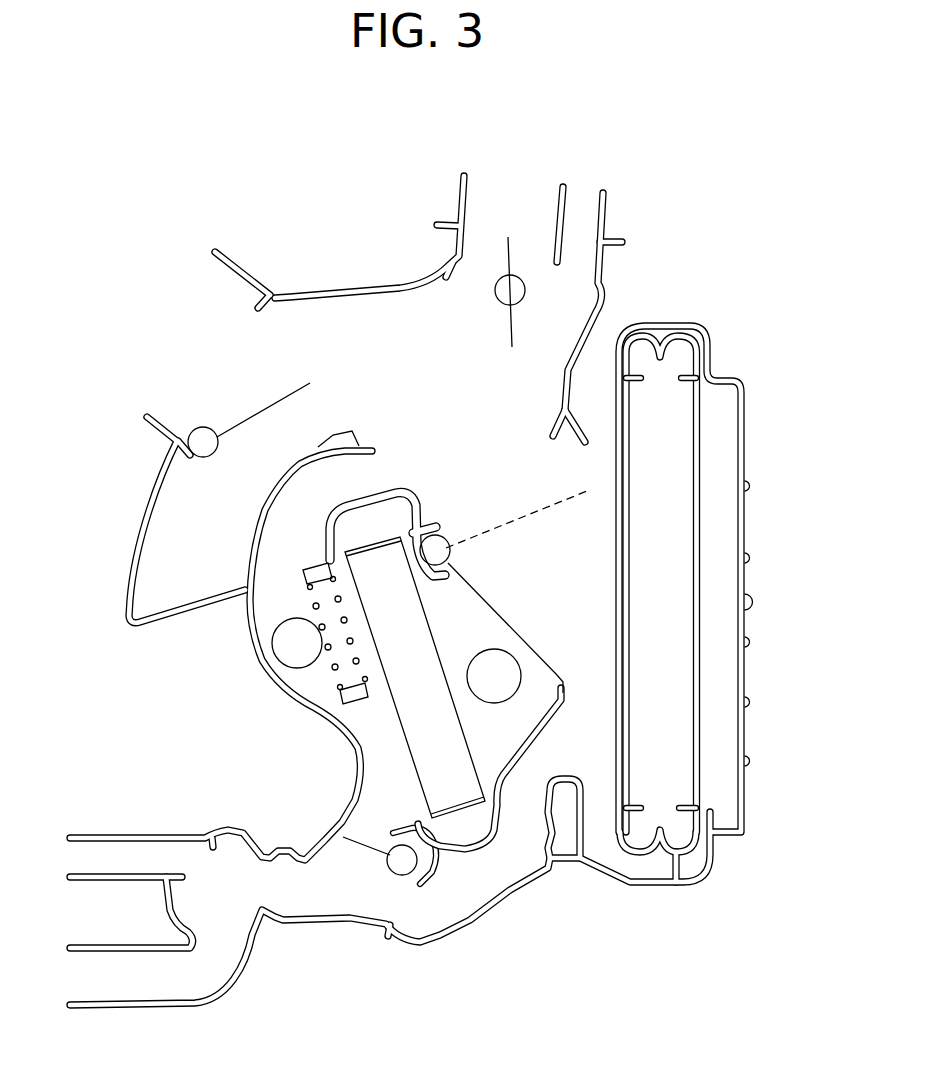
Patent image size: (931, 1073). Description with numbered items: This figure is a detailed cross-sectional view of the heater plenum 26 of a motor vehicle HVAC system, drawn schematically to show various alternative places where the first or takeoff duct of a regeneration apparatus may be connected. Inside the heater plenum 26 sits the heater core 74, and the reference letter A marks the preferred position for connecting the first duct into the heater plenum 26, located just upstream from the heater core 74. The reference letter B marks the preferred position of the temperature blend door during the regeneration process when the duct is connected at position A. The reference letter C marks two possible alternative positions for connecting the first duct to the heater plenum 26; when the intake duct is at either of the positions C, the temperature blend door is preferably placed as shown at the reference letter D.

The heater plenum 26 is at (528, 708).
The heater core 74 is at (445, 778).
The preferred connection position A is at (497, 703).
The temperature blend door position B is at (523, 637).
The alternative connection positions C is at (373, 800).
The temperature blend door position D is at (517, 517).